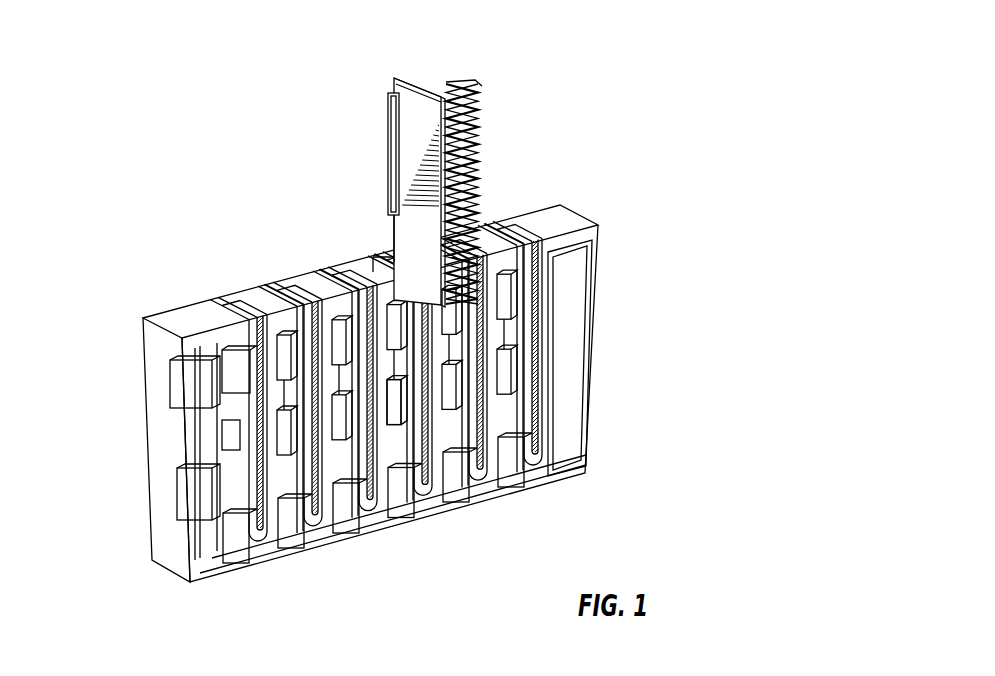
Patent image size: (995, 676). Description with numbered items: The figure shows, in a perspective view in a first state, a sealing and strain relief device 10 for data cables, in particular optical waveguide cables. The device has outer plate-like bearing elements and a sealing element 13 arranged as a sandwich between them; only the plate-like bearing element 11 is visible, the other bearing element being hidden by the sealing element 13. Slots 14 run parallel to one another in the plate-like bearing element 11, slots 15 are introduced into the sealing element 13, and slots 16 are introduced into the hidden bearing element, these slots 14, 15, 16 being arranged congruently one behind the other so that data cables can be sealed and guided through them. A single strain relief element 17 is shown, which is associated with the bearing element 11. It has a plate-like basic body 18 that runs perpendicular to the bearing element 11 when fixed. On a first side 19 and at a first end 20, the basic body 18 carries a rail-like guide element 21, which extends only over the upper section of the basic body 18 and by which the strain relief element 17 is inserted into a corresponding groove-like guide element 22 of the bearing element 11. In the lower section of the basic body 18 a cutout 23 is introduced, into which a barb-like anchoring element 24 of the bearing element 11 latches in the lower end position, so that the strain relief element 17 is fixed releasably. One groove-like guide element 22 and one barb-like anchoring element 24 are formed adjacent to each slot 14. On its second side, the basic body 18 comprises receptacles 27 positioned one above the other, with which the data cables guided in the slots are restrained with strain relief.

The sealing and strain relief device 10 is at (614, 152).
The plate-like bearing element 11 is at (566, 347).
The sealing element 13 is at (166, 443).
The slots 14 is at (217, 288).
The slots 15 is at (166, 450).
The slots 16 is at (390, 403).
The strain relief element 17 is at (444, 70).
The plate-like basic body 18 is at (423, 200).
The first side 19 is at (396, 226).
The first end 20 is at (388, 66).
The rail-like guide element 21 is at (392, 135).
The groove-like guide element 22 is at (392, 440).
The cutout 23 is at (395, 269).
The barb-like anchoring element 24 is at (298, 520).
The receptacles 27 is at (482, 206).